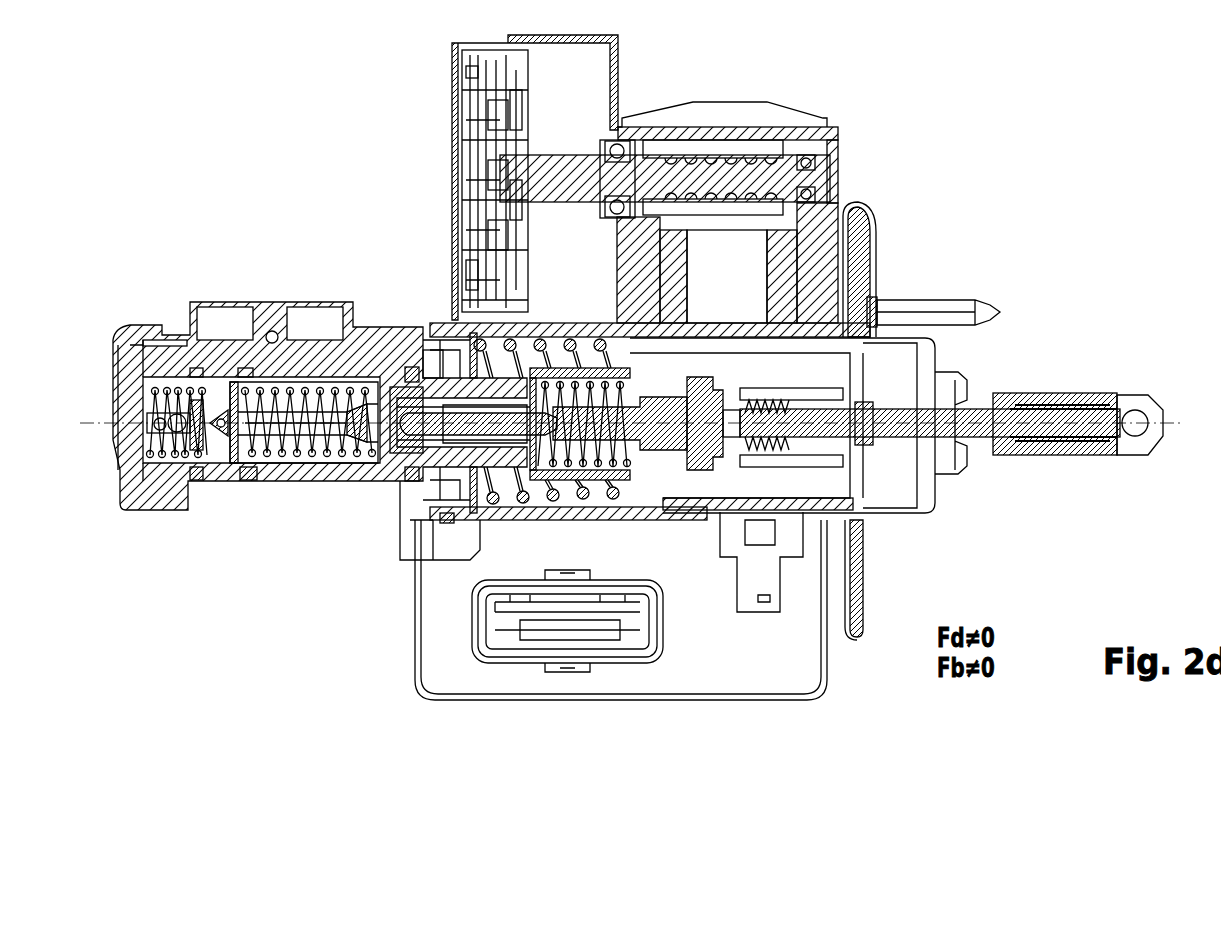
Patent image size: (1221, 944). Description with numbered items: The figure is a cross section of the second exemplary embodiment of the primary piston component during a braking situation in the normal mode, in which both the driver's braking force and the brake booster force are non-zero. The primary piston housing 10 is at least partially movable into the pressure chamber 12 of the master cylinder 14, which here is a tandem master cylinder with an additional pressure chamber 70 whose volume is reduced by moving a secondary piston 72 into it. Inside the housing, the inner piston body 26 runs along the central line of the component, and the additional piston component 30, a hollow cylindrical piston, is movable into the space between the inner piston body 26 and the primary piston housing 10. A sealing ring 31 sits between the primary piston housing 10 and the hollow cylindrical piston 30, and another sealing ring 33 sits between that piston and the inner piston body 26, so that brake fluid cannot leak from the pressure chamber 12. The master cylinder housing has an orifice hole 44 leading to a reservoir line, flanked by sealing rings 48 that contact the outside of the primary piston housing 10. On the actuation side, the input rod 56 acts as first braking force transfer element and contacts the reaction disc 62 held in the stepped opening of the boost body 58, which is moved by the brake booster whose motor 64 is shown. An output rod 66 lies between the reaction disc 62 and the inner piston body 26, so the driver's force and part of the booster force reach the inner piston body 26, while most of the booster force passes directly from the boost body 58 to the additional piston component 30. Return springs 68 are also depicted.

The primary piston housing 10 is at (367, 470).
The pressure chamber 12 is at (302, 463).
The master cylinder 14 is at (275, 320).
The inner piston body 26 is at (393, 413).
The additional piston component 30 is at (510, 480).
The sealing ring 31 is at (408, 388).
The sealing ring 33 is at (418, 477).
The orifice hole 44 is at (318, 313).
The sealing rings 48 is at (412, 372).
The input rod 56 is at (1057, 427).
The boost body 58 is at (825, 355).
The reaction disc 62 is at (700, 440).
The motor 64 is at (847, 112).
The output rod 66 is at (647, 417).
The return springs 68 is at (168, 386).
The additional pressure chamber 70 is at (147, 470).
The secondary piston 72 is at (220, 397).